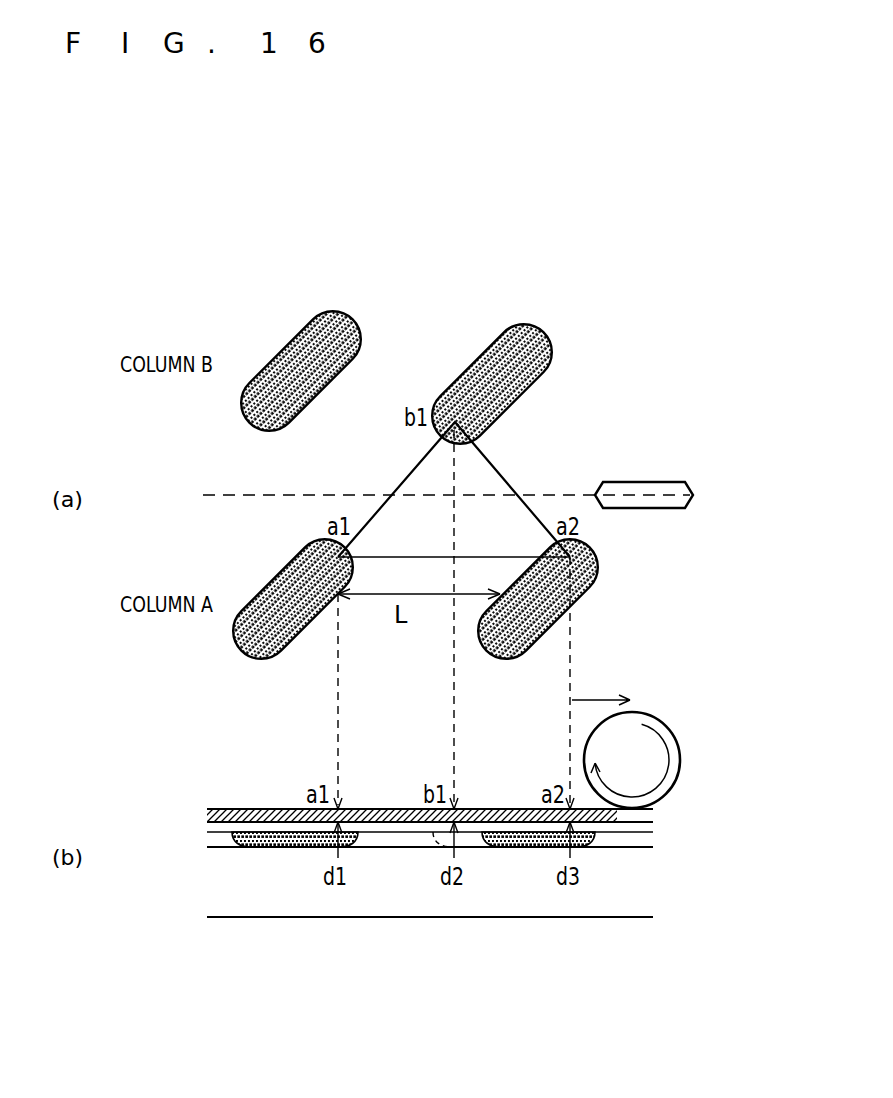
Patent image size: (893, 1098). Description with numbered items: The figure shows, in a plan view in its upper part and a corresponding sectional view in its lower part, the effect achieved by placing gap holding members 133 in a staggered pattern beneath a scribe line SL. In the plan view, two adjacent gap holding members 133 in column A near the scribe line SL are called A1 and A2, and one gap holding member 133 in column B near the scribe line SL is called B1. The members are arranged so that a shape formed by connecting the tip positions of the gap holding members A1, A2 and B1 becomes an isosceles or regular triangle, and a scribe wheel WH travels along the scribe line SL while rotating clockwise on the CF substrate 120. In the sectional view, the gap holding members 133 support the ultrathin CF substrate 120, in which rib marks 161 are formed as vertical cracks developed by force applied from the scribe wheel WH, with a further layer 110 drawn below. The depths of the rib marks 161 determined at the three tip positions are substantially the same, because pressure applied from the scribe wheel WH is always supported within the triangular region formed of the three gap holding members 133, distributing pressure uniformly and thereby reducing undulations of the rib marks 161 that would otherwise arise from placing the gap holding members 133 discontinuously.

The gap holding member 133 is at (207, 840).
The rib mark 161 is at (207, 816).
The CF substrate 120 is at (207, 826).
The head body 110 is at (217, 905).
The scribe wheel WH is at (645, 482).
The scribe line SL is at (429, 499).
The gap holding member A1 is at (293, 599).
The gap holding member A2 is at (538, 599).
The gap holding member B1 is at (492, 384).